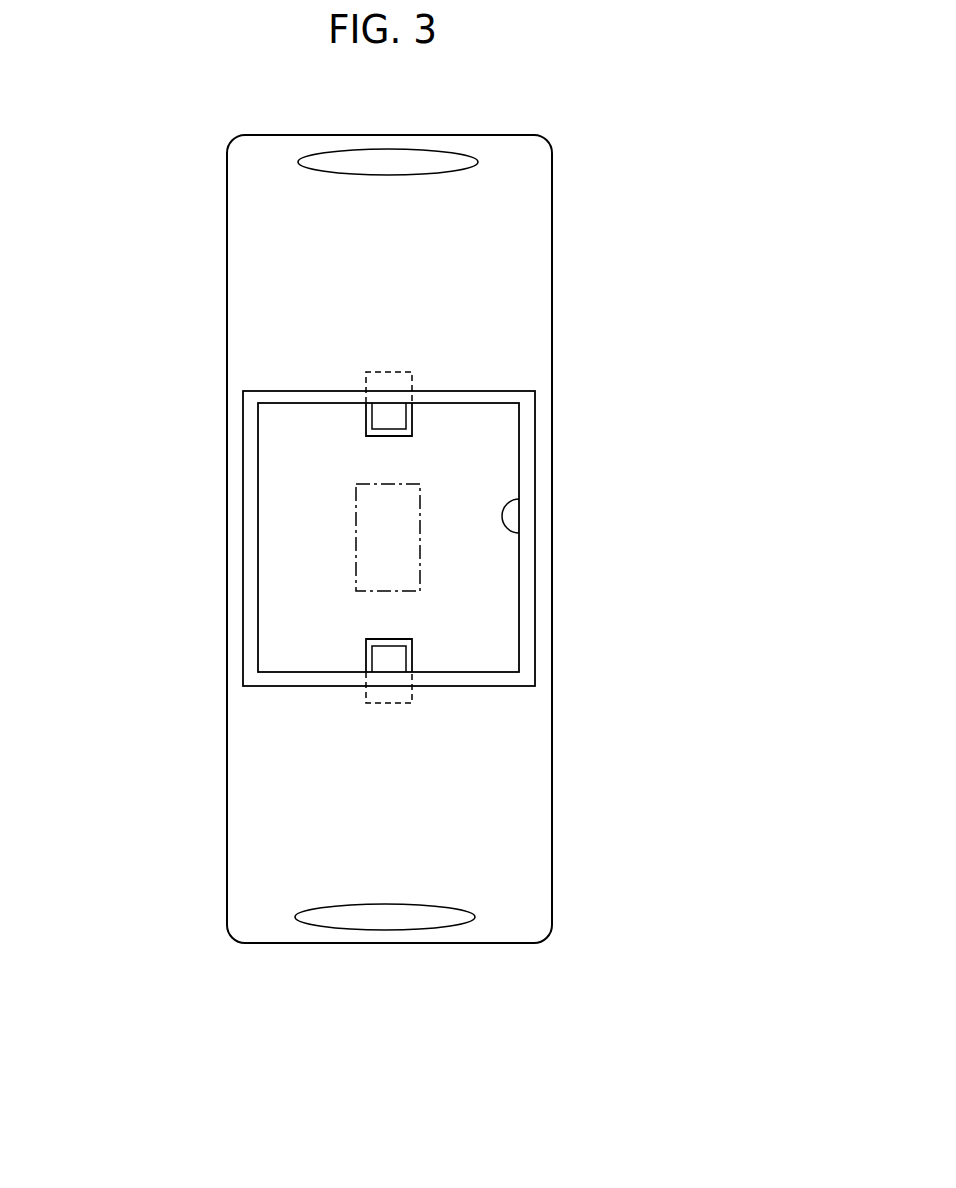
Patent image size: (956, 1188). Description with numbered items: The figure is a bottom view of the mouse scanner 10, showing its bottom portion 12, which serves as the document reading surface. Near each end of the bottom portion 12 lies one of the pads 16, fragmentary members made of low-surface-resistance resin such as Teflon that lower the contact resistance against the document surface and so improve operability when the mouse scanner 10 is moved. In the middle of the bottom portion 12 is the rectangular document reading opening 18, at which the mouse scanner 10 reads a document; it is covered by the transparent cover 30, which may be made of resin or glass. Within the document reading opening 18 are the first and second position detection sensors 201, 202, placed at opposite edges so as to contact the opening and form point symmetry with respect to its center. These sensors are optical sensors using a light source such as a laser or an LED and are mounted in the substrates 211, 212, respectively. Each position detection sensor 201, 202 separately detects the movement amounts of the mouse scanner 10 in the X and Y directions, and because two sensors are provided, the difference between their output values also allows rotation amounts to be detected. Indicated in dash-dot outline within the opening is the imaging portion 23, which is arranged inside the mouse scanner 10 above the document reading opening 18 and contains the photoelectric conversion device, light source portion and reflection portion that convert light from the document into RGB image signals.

The mouse scanner 10 is at (172, 480).
The bottom portion 12 is at (535, 265).
The pads 16 is at (393, 162).
The document reading opening 18 is at (519, 499).
The imaging portion 23 is at (355, 547).
The cover 30 is at (497, 390).
The first position detection sensor 201 is at (385, 413).
The second position detection sensor 202 is at (388, 655).
The substrate 211 is at (367, 421).
The substrate 212 is at (407, 663).